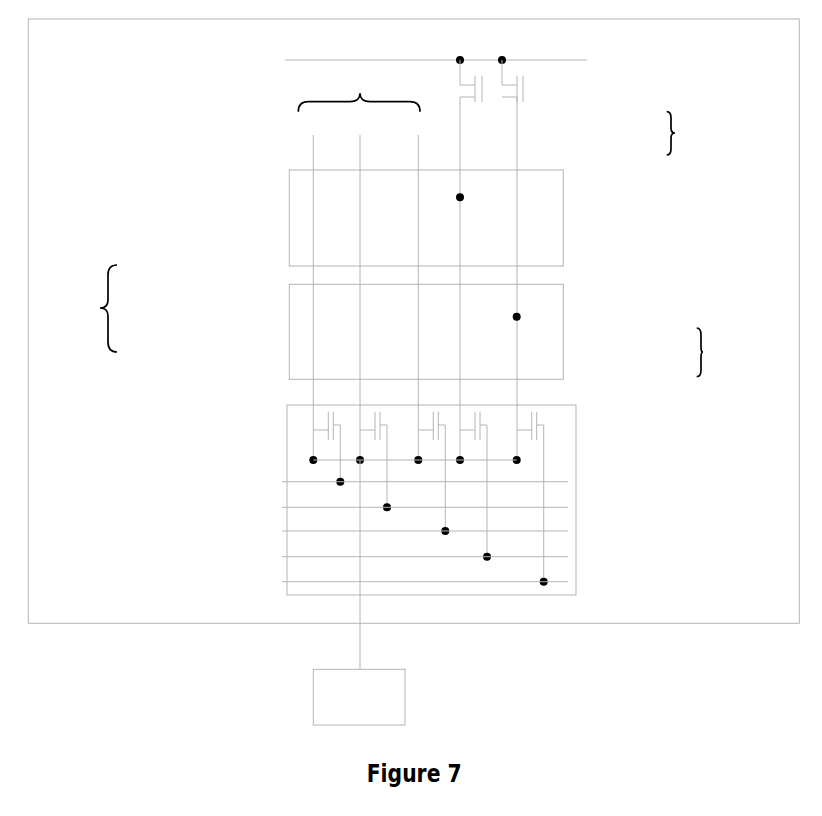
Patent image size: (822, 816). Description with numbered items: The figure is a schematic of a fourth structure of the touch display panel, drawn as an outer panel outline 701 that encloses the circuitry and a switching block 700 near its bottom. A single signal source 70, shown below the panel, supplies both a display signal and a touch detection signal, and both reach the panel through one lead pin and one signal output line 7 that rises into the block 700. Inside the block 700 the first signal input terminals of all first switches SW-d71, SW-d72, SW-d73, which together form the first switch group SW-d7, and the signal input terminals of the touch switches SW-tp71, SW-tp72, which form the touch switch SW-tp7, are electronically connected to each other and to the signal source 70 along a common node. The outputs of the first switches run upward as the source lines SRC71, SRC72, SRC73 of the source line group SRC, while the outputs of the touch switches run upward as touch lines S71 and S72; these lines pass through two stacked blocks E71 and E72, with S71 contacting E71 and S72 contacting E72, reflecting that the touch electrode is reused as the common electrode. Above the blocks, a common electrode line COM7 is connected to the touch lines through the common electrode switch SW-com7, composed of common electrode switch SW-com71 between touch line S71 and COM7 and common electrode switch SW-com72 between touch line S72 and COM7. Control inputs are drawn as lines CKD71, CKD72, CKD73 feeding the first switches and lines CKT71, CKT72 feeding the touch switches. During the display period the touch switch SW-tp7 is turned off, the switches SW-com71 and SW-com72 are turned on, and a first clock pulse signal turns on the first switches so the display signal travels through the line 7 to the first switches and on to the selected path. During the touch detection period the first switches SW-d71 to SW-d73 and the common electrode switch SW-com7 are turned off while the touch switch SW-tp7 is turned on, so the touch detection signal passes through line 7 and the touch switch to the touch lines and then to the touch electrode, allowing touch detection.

The display panel / frame 701 is at (78, 19).
The switching circuit block 700 is at (287, 447).
The signal output line 7 is at (360, 608).
The signal source 70 is at (359, 697).
The common electrode line COM7 is at (460, 64).
The common electrode switch SW-com7 is at (710, 133).
The common electrode switch SW-com71 is at (482, 97).
The common electrode switch SW-com72 is at (523, 95).
The touch line S71 is at (472, 278).
The touch line S72 is at (528, 278).
The source lines group SRC is at (359, 91).
The source line 71 SRC71 is at (312, 288).
The source line 72 SRC72 is at (362, 288).
The source line 73 SRC73 is at (420, 288).
The electrode 71 E71 is at (426, 218).
The electrode 72 E72 is at (426, 331).
The data switch group SW-d7 is at (77, 308).
The first switch SW-d71 is at (330, 424).
The first switch SW-d72 is at (377, 424).
The first switch SW-d73 is at (436, 424).
The touch switch SW-tp7 is at (727, 352).
The touch switch 71 SW-tp71 is at (481, 423).
The touch switch 72 SW-tp72 is at (544, 432).
The data clock line 71 CKD71 is at (397, 481).
The data clock line 72 CKD72 is at (397, 507).
The data clock line 73 CKD73 is at (398, 531).
The touch clock line 71 CKT71 is at (399, 557).
The touch clock line 72 CKT72 is at (397, 582).